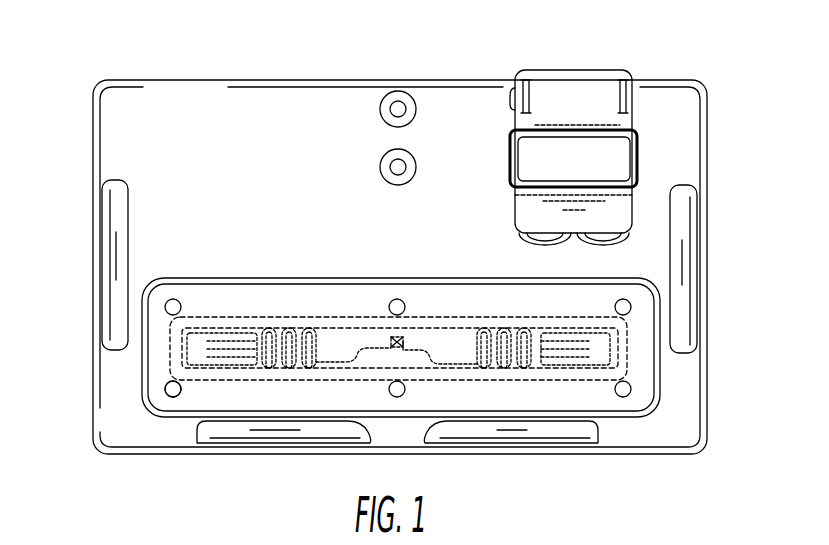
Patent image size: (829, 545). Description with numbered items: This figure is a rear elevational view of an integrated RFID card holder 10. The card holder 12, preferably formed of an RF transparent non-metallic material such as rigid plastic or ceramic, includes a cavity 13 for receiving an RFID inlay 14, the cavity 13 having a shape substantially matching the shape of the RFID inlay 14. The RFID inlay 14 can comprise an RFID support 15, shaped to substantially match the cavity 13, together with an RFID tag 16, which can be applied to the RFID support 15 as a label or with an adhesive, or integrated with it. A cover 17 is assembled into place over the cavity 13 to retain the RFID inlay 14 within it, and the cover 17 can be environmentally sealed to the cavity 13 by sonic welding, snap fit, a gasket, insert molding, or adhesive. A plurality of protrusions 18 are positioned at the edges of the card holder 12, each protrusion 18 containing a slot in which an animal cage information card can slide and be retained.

The integrated RFID card holder 10 is at (55, 38).
The card holder 12 is at (213, 78).
The cavity 13 is at (173, 417).
The RFID inlay 14 is at (172, 357).
The RFID support 15 is at (162, 389).
The RFID tag 16 is at (618, 376).
The cover 17 is at (573, 395).
The protrusions 18 is at (112, 250).